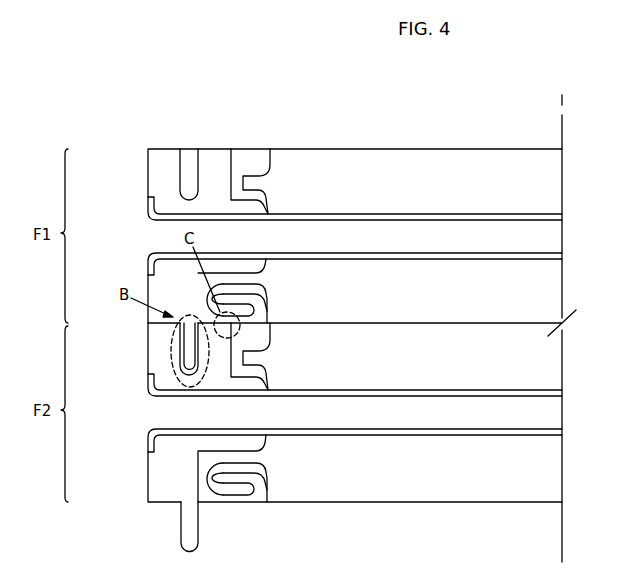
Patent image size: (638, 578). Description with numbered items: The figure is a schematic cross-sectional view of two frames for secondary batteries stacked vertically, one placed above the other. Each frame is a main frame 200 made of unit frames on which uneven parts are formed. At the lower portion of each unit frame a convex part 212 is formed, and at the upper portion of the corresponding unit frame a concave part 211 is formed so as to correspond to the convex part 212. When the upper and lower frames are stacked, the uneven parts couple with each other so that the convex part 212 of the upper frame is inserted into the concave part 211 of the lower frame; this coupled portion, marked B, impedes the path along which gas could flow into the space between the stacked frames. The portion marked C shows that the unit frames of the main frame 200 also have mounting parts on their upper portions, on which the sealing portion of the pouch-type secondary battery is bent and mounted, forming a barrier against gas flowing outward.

The main frame 200 is at (150, 274).
The concave part 211 is at (191, 178).
The convex part 212 is at (189, 355).